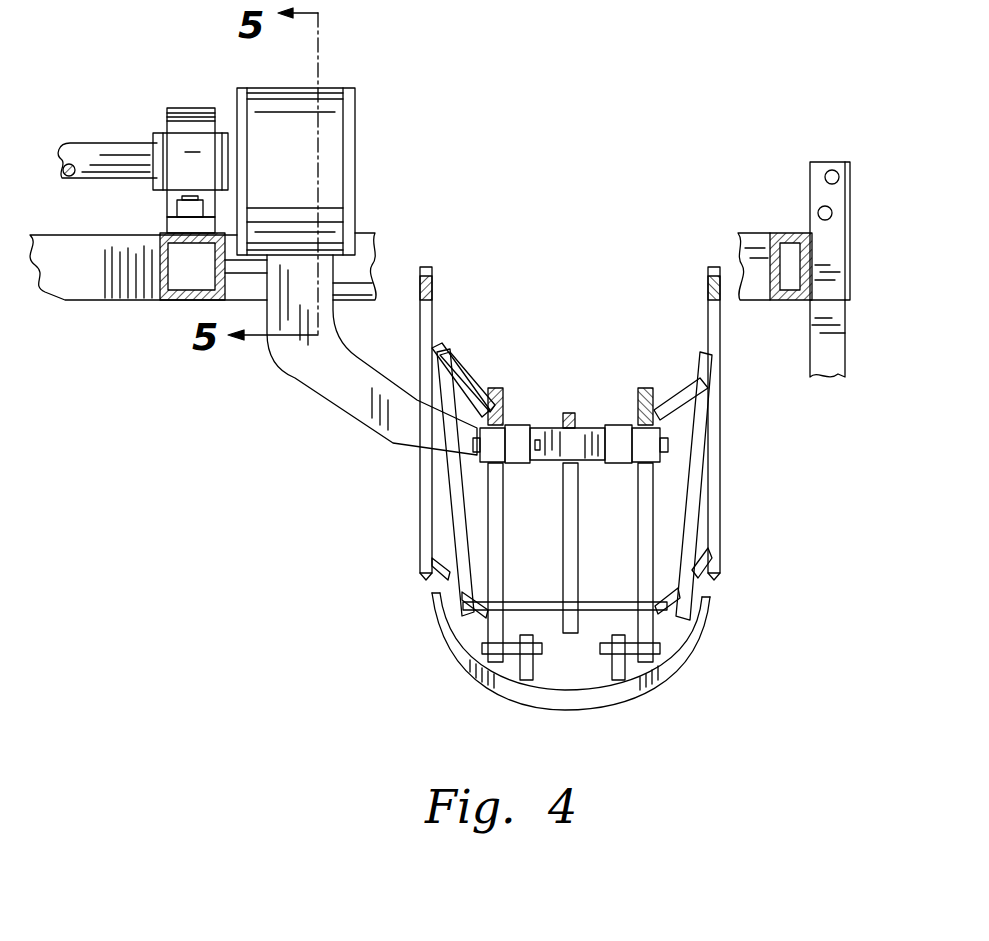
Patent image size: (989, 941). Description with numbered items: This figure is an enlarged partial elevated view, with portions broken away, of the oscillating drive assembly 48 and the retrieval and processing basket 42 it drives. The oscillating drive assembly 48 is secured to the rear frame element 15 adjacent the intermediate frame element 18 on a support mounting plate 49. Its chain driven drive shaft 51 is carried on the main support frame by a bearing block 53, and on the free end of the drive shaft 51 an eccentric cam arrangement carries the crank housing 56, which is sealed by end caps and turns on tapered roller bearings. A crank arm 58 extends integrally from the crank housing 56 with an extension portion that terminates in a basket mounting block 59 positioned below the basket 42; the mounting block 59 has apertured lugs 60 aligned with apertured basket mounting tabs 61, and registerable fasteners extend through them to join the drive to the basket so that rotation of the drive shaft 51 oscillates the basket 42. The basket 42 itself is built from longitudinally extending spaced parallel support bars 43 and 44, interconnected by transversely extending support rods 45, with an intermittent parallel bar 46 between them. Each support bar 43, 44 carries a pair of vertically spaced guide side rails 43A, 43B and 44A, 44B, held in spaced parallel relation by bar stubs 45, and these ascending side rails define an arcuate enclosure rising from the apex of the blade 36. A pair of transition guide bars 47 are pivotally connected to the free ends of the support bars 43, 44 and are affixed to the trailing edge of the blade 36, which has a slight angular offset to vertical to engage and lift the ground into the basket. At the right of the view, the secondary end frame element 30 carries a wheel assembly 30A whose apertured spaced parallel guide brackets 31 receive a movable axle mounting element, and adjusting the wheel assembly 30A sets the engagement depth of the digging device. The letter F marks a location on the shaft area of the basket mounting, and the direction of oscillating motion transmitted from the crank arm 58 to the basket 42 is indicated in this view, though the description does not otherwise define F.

The rear frame element 15 is at (90, 280).
The intermediate frame element 18 is at (170, 302).
The secondary end frame element 30 is at (790, 235).
The wheel assembly 30A is at (880, 330).
The guide bracket 31 is at (820, 165).
The blade 36 is at (692, 657).
The retrieval and processing basket 42 is at (742, 418).
The support bar 43 is at (645, 518).
The guide side rail 43A is at (720, 330).
The guide side rail 43B is at (698, 465).
The support bar 44 is at (500, 575).
The guide side rail 44A is at (428, 485).
The guide side rail 44B is at (447, 525).
The support rod / bar stub 45 is at (465, 395).
The intermittent parallel bar 46 is at (572, 545).
The transition guide bar 47 is at (617, 668).
The oscillating drive assembly 48 is at (375, 65).
The support mounting plate 49 is at (85, 235).
The drive shaft 51 is at (97, 155).
The bearing block 53 is at (190, 115).
The crank housing 56 is at (320, 165).
The crank arm 58 is at (322, 362).
The basket mounting block 59 is at (570, 455).
The apertured lug 60 is at (518, 440).
The basket mounting tab 61 is at (590, 440).
The force direction F is at (595, 445).